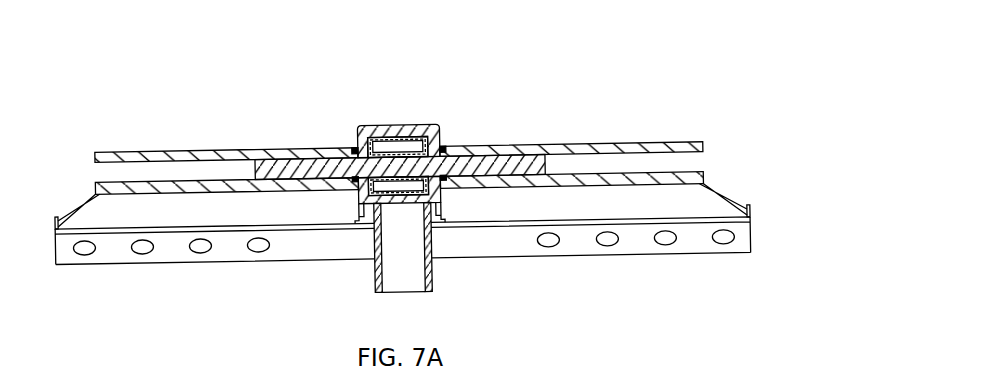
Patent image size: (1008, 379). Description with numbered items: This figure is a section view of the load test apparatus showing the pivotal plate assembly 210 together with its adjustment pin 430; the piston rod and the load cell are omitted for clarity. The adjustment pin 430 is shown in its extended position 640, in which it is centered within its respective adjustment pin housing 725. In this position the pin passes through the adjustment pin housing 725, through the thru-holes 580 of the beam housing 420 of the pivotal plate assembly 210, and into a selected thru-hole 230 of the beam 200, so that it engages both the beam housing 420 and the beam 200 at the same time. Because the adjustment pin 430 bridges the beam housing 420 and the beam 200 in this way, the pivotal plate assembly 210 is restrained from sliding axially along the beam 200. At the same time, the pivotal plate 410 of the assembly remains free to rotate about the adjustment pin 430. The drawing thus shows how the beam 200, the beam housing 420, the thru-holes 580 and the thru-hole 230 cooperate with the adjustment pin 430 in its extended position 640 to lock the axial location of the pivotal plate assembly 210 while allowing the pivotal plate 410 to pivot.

The beam 200 is at (379, 134).
The pivotal plate assembly 210 is at (458, 175).
The thru-hole 230 is at (446, 192).
The pivotal plate 410 is at (620, 208).
The beam housing 420 is at (399, 126).
The adjustment pin 430 is at (552, 153).
The thru-holes 580 is at (355, 146).
The extended position 640 is at (245, 149).
The adjustment pin housing 725 is at (605, 138).